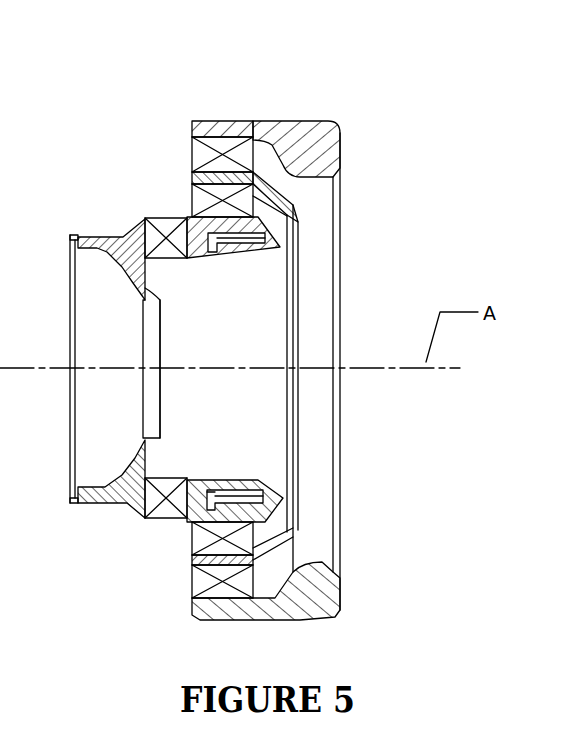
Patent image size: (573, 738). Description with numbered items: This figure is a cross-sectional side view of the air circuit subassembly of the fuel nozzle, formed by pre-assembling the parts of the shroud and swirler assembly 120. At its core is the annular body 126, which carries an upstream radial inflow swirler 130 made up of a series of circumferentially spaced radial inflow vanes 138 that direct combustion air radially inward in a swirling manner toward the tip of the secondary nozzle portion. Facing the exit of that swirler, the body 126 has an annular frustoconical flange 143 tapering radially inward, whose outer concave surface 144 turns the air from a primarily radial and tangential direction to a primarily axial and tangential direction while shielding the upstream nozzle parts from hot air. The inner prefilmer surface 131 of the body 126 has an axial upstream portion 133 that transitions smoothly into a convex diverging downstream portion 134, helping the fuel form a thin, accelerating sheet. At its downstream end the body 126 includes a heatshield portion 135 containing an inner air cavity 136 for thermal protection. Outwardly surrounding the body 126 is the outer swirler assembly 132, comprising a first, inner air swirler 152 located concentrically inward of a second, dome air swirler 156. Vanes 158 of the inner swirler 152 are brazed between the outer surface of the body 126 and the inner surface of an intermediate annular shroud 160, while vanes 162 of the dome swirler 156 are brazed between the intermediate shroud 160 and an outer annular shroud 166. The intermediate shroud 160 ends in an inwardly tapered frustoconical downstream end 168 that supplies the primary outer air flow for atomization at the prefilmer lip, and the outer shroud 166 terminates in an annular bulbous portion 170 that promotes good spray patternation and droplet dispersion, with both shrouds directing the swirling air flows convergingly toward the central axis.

The shroud and swirler assembly 120 is at (344, 315).
The annular body 126 is at (123, 310).
The radial inflow swirler 130 is at (165, 218).
The prefilmer surface 131 is at (220, 262).
The outer swirler assembly 132 is at (305, 177).
The axial upstream portion 133 is at (190, 262).
The diverging downstream portion 134 is at (258, 258).
The downstream heatshield portion 135 is at (252, 487).
The inner air cavity 136 is at (225, 497).
The radial inflow vanes 138 is at (165, 256).
The frustoconical flange 143 is at (138, 290).
The concave surface 144 is at (155, 290).
The first air swirler 152 is at (189, 322).
The second air swirler 156 is at (191, 147).
The vanes of inner swirler 158 is at (255, 200).
The intermediate annular shroud 160 is at (262, 172).
The vanes of dome swirler 162 is at (257, 165).
The outer annular shroud 166 is at (332, 128).
The inwardly tapered downstream end 168 is at (297, 203).
The bulbous portion 170 is at (325, 154).